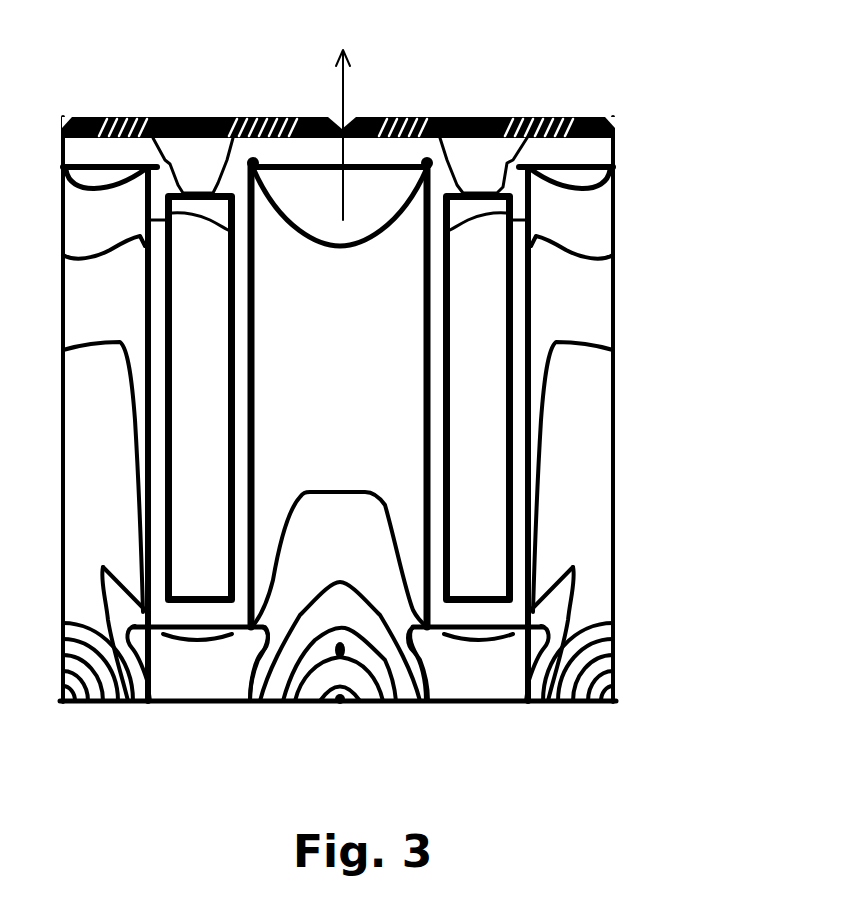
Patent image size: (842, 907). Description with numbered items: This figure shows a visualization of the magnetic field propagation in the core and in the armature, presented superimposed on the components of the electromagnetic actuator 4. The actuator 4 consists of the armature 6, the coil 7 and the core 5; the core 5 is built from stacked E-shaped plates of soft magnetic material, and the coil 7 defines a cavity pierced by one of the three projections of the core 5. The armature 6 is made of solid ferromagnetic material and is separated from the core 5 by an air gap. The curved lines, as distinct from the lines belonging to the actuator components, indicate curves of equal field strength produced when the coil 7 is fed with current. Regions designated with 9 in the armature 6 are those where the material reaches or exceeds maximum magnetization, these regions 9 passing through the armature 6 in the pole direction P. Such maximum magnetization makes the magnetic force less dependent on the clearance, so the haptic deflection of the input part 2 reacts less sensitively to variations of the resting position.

The input part 2 is at (193, 153).
The electromagnetic actuator 4 is at (675, 219).
The core 5 is at (340, 430).
The armature 6 is at (615, 118).
The coil 7 is at (339, 398).
The region of maximum magnetization 9 is at (215, 127).
The pole direction P is at (353, 135).